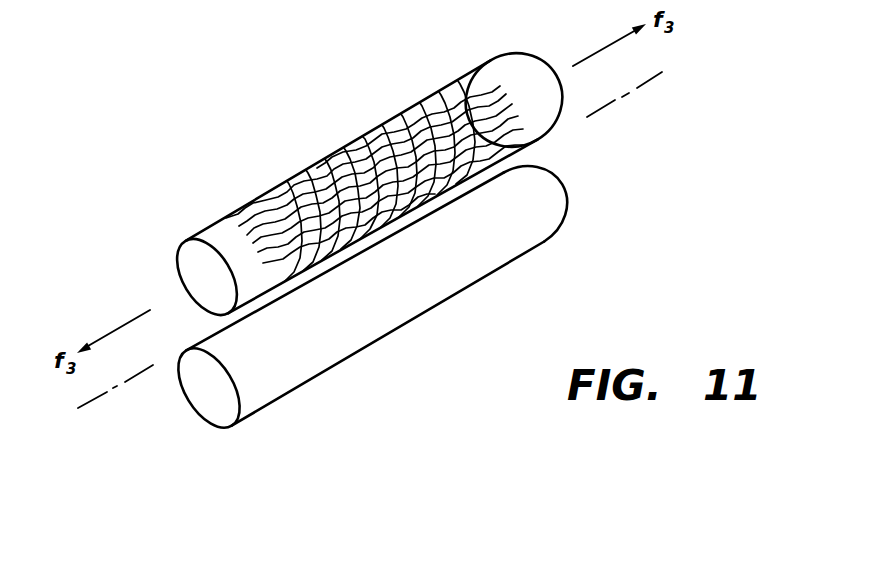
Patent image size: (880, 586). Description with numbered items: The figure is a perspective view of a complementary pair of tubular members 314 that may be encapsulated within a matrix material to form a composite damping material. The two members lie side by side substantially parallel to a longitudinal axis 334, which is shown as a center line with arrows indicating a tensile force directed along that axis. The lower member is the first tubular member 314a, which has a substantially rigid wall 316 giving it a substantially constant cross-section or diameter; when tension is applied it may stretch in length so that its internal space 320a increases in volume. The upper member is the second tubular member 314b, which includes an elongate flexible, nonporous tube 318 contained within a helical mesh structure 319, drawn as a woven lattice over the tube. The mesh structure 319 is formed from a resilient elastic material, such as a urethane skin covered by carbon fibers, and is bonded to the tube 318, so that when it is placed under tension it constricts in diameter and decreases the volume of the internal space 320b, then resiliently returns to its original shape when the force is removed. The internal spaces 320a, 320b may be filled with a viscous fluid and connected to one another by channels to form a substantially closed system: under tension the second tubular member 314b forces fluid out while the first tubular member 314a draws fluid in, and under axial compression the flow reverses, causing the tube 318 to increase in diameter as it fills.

The tubular members 314 is at (194, 198).
The first tubular member 314a is at (377, 342).
The second tubular member 314b is at (333, 157).
The substantially rigid wall 316 is at (504, 245).
The elongate flexible nonporous tube 318 is at (461, 96).
The helical mesh structure 319 is at (272, 195).
The internal space of first tubular member 320a is at (221, 409).
The internal space of second tubular member 320b is at (190, 272).
The longitudinal axis 334 is at (626, 96).